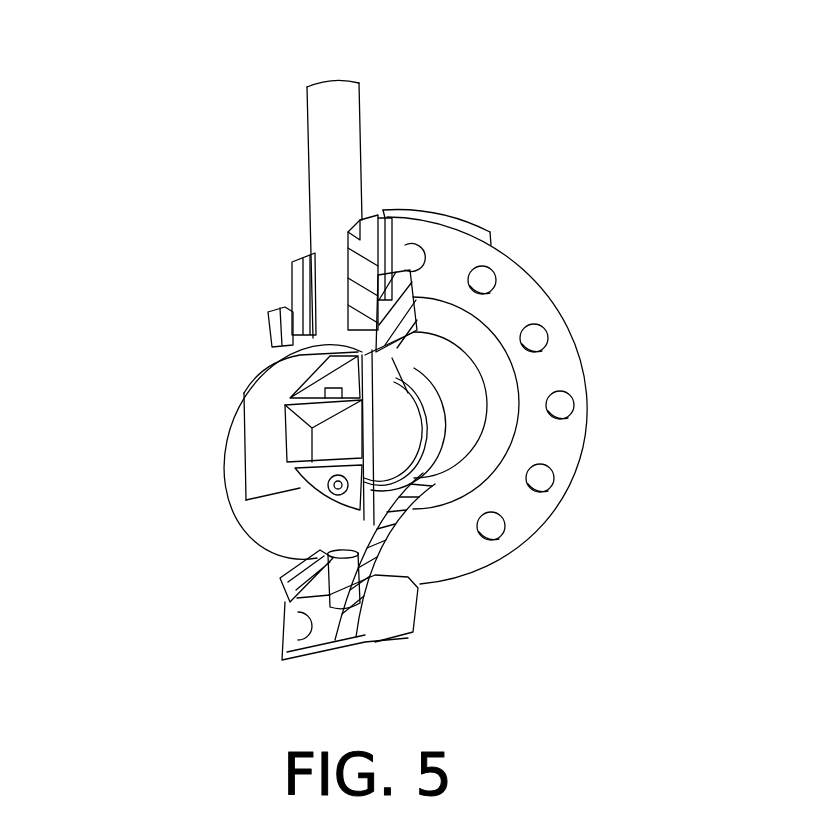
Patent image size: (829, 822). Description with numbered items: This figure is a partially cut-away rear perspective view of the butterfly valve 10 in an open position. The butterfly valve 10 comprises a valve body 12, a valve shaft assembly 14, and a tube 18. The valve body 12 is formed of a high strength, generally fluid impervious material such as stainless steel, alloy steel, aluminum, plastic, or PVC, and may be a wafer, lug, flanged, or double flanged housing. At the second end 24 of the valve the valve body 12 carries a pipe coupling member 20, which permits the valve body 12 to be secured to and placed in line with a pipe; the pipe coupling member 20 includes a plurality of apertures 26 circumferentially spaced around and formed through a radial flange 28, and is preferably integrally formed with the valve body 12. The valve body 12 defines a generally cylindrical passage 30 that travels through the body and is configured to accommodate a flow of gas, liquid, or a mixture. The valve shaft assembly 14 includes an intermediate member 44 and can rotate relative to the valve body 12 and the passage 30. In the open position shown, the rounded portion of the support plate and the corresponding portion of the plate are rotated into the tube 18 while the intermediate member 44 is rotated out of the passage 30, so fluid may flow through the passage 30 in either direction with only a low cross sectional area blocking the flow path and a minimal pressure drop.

The butterfly valve 10 is at (530, 145).
The valve body 12 is at (425, 600).
The valve shaft assembly 14 is at (340, 160).
The tube 18 is at (226, 496).
The pipe coupling member 20 is at (517, 515).
The second end 24 is at (648, 425).
The apertures 26 is at (545, 476).
The radial flange 28 is at (463, 556).
The passage 30 is at (438, 423).
The intermediate member 44 is at (265, 450).